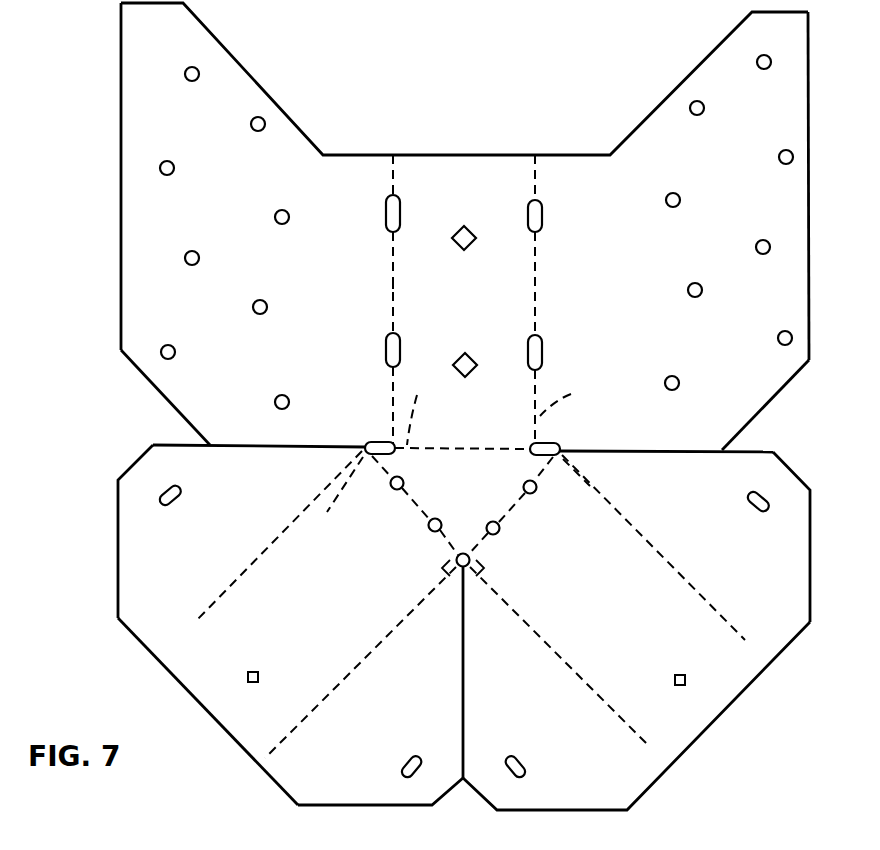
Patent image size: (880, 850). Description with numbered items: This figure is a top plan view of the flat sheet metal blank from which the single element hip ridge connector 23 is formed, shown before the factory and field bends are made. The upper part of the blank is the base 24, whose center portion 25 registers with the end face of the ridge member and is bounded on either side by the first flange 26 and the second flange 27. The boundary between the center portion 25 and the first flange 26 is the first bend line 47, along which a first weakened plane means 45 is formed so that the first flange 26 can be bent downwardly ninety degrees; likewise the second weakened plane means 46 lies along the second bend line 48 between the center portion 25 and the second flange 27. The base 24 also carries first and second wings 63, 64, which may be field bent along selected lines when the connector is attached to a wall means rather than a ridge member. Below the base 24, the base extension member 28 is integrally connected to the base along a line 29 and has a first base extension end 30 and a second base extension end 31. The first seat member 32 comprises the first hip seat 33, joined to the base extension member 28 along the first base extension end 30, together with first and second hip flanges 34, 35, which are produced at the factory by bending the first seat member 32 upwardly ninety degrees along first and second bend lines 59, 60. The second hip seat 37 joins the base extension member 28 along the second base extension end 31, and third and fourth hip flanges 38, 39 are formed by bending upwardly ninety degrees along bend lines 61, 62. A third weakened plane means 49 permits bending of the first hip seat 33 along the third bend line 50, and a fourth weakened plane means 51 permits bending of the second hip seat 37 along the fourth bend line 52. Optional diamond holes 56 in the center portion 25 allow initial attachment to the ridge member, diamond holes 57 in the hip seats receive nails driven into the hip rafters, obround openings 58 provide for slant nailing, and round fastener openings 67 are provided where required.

The hip ridge connector 23 is at (92, 313).
The base 24 is at (648, 99).
The center portion 25 is at (451, 317).
The first flange 26 is at (246, 270).
The second flange 27 is at (696, 249).
The base extension member 28 is at (448, 482).
The line 29 is at (419, 408).
The first base extension end 30 is at (335, 499).
The second base extension end 31 is at (572, 464).
The first seat member 32 is at (140, 657).
The first hip seat 33 is at (296, 617).
The first hip flange 34 is at (136, 564).
The second hip flange 35 is at (326, 775).
The second hip seat 37 is at (618, 642).
The third hip flange 38 is at (558, 772).
The fourth hip flange 39 is at (753, 564).
The first weakened plane means 45 is at (402, 210).
The second weakened plane means 46 is at (544, 212).
The first bend line 47 is at (396, 296).
The second bend line 48 is at (570, 397).
The third weakened plane means 49 is at (390, 484).
The third bend line 50 is at (445, 585).
The fourth weakened plane means 51 is at (537, 488).
The fourth bend line 52 is at (477, 585).
The diamond holes 56 is at (472, 229).
The diamond holes 57 is at (260, 674).
The obround openings 58 is at (183, 490).
The first bend line 59 is at (192, 624).
The second bend line 60 is at (316, 706).
The bend line 61 is at (640, 736).
The bend line 62 is at (745, 640).
The first wing 63 is at (184, 134).
The second wing 64 is at (739, 124).
The round fastener openings 67 is at (257, 313).